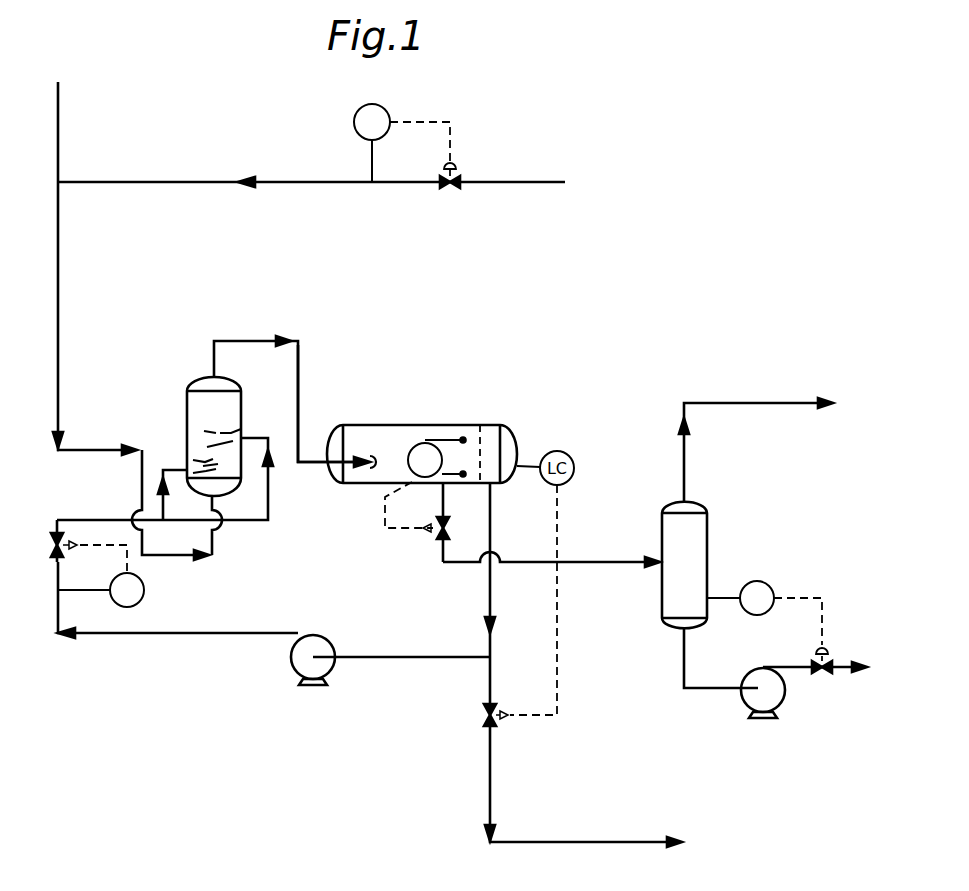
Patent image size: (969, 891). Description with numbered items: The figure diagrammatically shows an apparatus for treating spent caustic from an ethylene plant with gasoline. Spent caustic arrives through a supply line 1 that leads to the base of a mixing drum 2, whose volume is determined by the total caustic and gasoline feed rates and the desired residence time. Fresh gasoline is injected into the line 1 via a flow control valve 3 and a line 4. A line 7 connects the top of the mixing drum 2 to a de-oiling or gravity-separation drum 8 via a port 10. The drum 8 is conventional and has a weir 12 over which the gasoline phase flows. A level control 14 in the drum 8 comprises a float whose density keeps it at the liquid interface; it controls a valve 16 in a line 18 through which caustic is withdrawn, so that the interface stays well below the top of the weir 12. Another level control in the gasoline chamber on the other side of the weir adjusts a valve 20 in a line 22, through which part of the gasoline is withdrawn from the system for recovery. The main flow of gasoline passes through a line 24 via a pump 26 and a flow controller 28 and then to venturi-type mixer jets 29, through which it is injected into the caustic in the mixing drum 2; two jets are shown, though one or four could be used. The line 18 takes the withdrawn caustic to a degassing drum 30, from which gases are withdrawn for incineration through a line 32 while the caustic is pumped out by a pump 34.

The line 1 is at (60, 306).
The mixing drum 2 is at (187, 402).
The flow control valve 3 is at (458, 172).
The line 4 is at (147, 181).
The line 7 is at (298, 384).
The de-oiling or gravity-separation drum 8 is at (481, 421).
The port 10 is at (372, 470).
The weir 12 is at (481, 438).
The level control 14 is at (425, 478).
The valve 16 is at (440, 537).
The line 18 is at (605, 565).
The valve 20 is at (484, 715).
The line 22 is at (492, 593).
The line 24 is at (250, 632).
The pump 26 is at (334, 644).
The flow controller 28 is at (142, 596).
The mixer jets 29 is at (192, 462).
The degassing drum 30 is at (707, 538).
The line 32 is at (780, 406).
The pump 34 is at (776, 698).